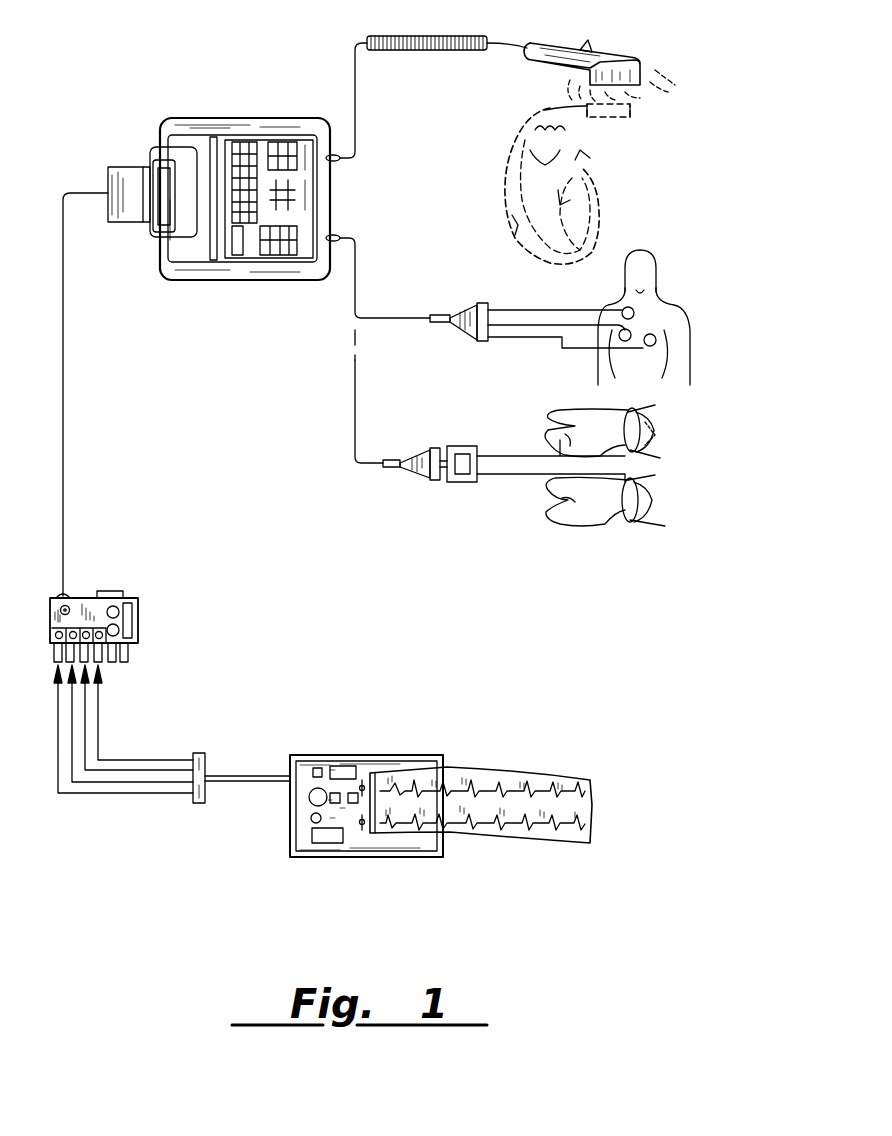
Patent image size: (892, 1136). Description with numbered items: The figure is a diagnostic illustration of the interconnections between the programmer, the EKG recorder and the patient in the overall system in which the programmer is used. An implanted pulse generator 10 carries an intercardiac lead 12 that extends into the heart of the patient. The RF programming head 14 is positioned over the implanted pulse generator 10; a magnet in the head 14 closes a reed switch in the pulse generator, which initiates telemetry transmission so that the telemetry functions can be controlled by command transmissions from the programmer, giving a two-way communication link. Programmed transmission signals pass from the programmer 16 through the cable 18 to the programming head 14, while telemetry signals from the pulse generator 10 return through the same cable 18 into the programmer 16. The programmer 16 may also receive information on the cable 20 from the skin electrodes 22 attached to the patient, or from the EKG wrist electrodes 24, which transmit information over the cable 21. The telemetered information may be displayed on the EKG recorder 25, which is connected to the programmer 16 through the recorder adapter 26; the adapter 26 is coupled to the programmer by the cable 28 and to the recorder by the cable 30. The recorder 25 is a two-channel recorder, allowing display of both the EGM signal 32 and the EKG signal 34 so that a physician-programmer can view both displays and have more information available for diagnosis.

The implanted pulse generator 10 is at (637, 107).
The intercardiac lead 12 is at (525, 130).
The RF programming head 14 is at (617, 60).
The programmer 16 is at (181, 118).
The cable 18 is at (355, 60).
The cable 20 is at (408, 318).
The cable 21 is at (355, 412).
The skin electrodes 22 is at (655, 335).
The EKG wrist electrodes 24 is at (648, 500).
The EKG recorder 25 is at (350, 752).
The recorder adapter 26 is at (140, 608).
The cable 28 is at (63, 445).
The cable 30 is at (116, 703).
The EGM signal 32 is at (512, 791).
The EKG signal 34 is at (512, 822).